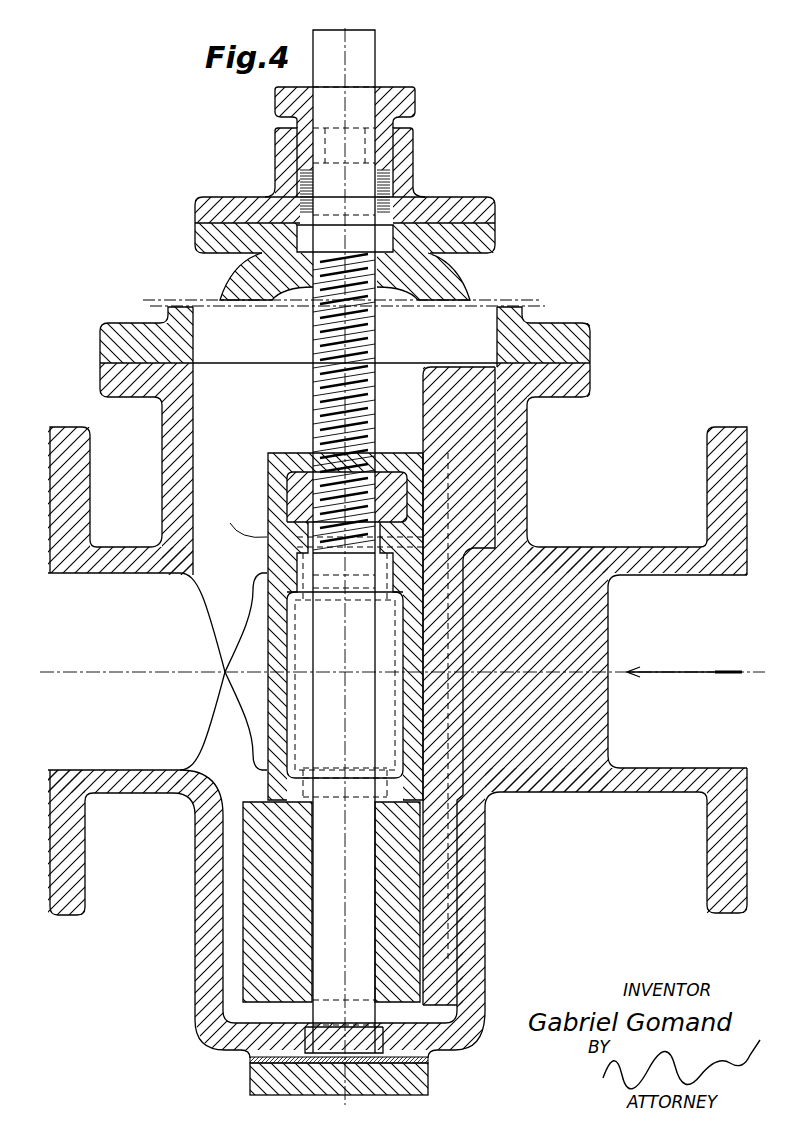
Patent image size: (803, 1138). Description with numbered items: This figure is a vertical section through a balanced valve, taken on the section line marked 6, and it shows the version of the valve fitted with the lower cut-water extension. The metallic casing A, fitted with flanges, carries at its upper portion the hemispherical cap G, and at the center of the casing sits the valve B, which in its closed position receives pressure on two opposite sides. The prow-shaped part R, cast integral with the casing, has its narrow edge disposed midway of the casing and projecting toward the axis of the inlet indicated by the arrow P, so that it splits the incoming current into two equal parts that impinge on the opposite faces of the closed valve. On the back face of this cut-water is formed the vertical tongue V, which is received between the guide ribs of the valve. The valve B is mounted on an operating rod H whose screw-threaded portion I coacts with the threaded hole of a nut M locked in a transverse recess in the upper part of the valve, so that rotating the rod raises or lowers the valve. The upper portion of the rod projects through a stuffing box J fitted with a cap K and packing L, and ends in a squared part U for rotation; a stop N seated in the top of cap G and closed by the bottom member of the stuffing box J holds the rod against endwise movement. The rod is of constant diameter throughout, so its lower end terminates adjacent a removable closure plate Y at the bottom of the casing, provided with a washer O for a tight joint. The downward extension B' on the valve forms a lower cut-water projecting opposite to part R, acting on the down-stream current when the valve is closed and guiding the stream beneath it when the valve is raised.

The squared part U is at (361, 141).
The cap K is at (413, 102).
The packing L is at (380, 181).
The stuffing box J is at (212, 197).
The stop N is at (307, 237).
The hemispherical cap G is at (447, 283).
The screw-threaded portion I is at (378, 335).
The vertical tongue V is at (445, 402).
The nut M is at (268, 478).
The casing A is at (162, 510).
The valve B is at (322, 661).
The operating rod H is at (328, 652).
The cut-water part R is at (612, 610).
The inlet arrow P is at (684, 661).
The section line 6 is at (392, 566).
The downward extension B' is at (284, 902).
The washer O is at (250, 1060).
The removable closure plate Y is at (428, 1078).